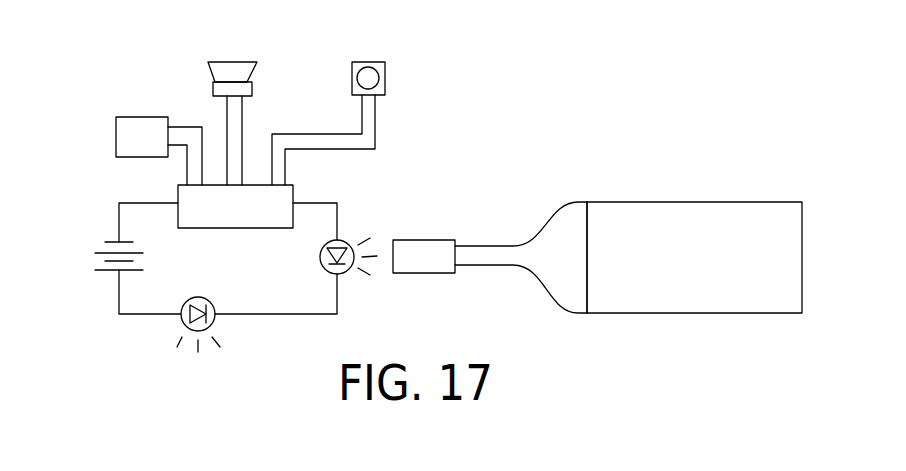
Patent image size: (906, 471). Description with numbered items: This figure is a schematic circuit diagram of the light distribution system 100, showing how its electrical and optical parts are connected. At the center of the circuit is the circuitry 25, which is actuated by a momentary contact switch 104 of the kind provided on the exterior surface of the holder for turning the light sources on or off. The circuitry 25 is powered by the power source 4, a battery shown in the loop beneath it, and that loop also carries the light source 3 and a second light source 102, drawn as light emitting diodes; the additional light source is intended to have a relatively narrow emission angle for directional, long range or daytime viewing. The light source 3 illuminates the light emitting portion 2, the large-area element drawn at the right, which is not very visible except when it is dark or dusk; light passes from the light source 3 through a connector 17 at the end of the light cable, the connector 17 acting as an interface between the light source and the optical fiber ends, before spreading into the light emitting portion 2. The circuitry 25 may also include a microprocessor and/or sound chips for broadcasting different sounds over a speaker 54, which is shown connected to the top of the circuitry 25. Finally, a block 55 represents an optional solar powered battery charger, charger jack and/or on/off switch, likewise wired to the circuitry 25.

The light emitting portion 2 is at (630, 199).
The light source 3 is at (352, 231).
The power source 4 is at (82, 278).
The connector 17 is at (428, 248).
The circuitry 25 is at (248, 176).
The speaker 54 is at (225, 67).
The on/off switch 55 is at (137, 125).
The light distribution system 100 is at (597, 224).
The light emitting diode 102 is at (168, 335).
The momentary contact switch 104 is at (379, 76).